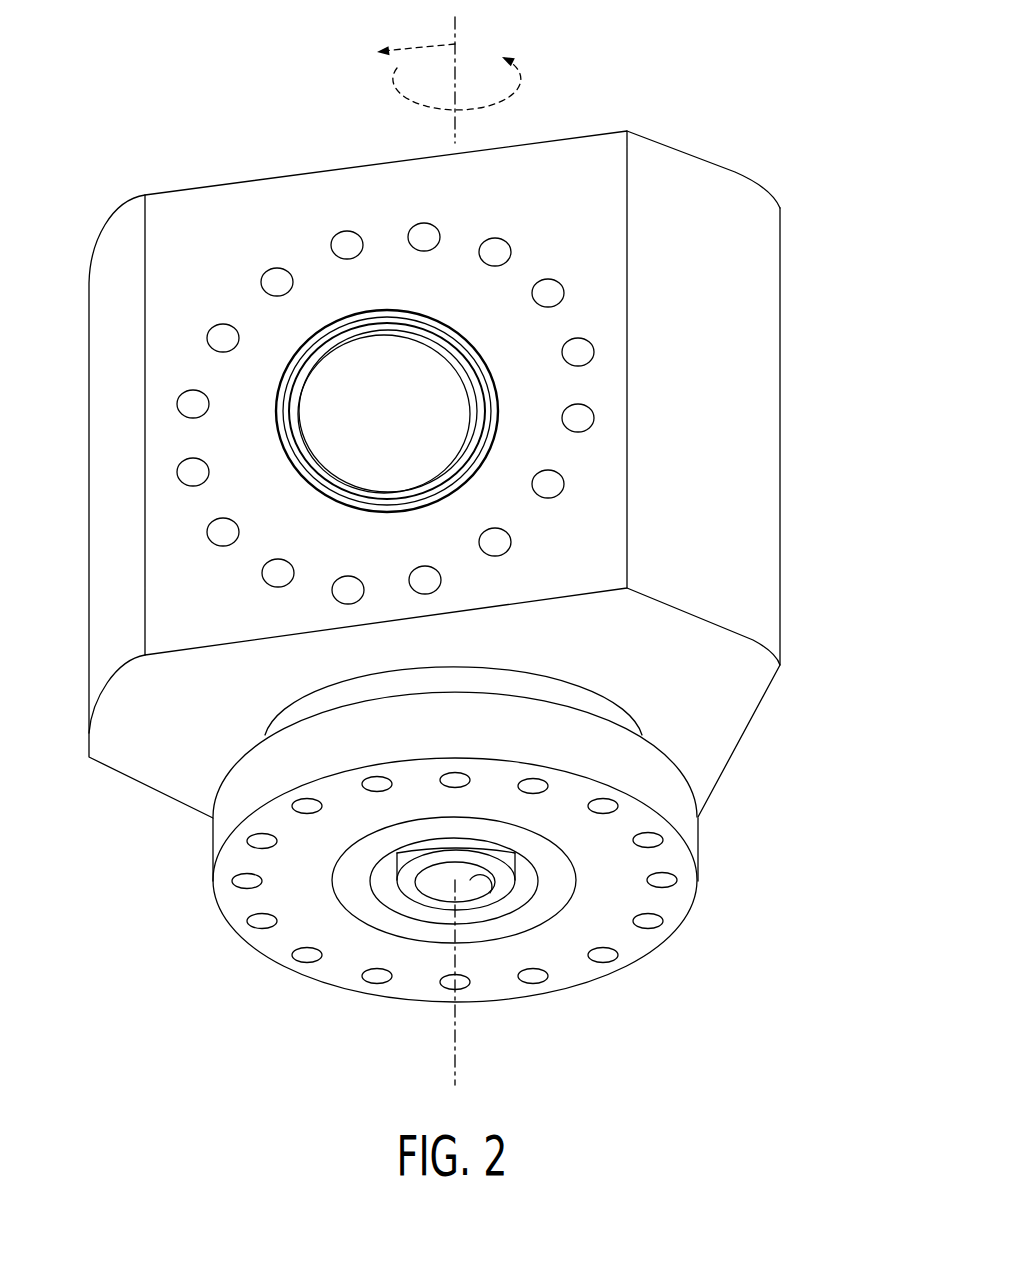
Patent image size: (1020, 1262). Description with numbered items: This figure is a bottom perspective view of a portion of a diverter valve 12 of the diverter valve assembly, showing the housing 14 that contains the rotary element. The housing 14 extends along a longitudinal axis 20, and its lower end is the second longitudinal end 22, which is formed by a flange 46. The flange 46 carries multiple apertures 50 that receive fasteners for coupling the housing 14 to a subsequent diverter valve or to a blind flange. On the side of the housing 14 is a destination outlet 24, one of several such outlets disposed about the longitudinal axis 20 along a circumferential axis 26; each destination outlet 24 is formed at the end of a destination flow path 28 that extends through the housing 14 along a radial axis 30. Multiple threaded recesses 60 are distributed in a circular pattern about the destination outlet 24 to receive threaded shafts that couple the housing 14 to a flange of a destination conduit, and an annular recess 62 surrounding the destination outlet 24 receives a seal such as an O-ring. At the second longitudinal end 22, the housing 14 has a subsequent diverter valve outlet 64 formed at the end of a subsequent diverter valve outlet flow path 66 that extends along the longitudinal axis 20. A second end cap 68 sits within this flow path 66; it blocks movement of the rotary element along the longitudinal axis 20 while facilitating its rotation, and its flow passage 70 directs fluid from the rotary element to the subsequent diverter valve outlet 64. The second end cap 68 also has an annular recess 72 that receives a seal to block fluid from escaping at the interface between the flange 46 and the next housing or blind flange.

The diverter valve 12 is at (715, 103).
The housing 14 is at (780, 437).
The longitudinal axis 20 is at (458, 56).
The second longitudinal end 22 is at (623, 985).
The destination outlet 24 is at (340, 402).
The circumferential axis 26 is at (412, 103).
The destination flow path 28 is at (398, 360).
The radial axis 30 is at (420, 45).
The flange 46 is at (250, 773).
The apertures 50 is at (250, 928).
The threaded recesses 60 is at (279, 284).
The annular recess 62 is at (340, 345).
The subsequent diverter valve outlet 64 is at (433, 880).
The subsequent diverter valve outlet flow path 66 is at (541, 930).
The second end cap 68 is at (557, 899).
The flow passage 70 is at (491, 894).
The annular recess 72 is at (530, 875).